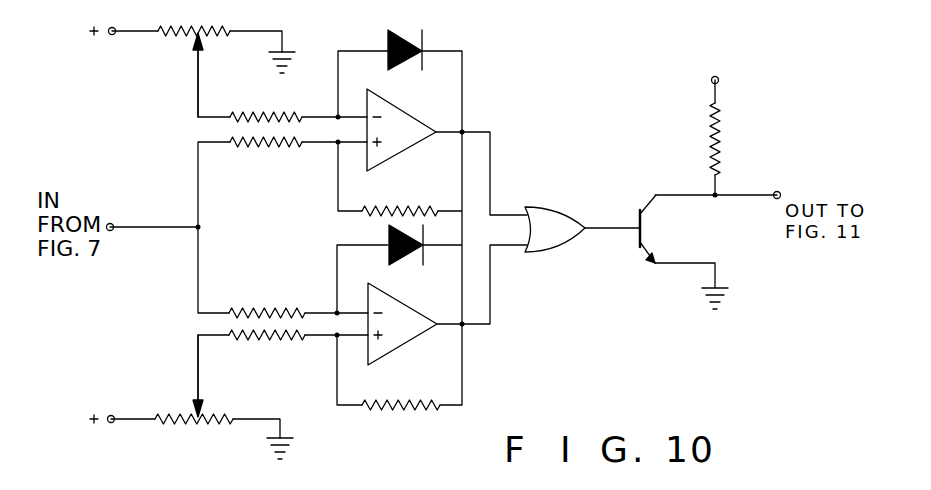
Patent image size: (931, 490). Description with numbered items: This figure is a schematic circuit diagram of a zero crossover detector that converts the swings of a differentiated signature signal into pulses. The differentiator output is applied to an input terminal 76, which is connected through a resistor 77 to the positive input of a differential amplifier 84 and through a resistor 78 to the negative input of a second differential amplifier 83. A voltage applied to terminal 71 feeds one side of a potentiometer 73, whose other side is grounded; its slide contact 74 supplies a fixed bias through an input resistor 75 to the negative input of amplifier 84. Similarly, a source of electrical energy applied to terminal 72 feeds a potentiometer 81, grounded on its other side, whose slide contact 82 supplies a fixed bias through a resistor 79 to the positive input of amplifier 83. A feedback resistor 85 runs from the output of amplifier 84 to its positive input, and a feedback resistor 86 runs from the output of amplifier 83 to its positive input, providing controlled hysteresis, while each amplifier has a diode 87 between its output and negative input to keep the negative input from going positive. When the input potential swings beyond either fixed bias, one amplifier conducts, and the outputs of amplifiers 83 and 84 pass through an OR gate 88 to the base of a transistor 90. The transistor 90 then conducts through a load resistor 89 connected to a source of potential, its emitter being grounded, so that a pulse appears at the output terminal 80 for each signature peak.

The input terminal 71 is at (114, 36).
The input terminal 72 is at (110, 413).
The potentiometer 73 is at (197, 28).
The slide contact 74 is at (192, 40).
The input resistor 75 is at (268, 112).
The input terminal 76 is at (110, 222).
The resistor 77 is at (272, 147).
The resistor 78 is at (268, 308).
The resistor 79 is at (272, 339).
The output terminal 80 is at (777, 192).
The potentiometer 81 is at (192, 425).
The slide contact 82 is at (203, 412).
The differential amplifier 83 is at (410, 327).
The differential amplifier 84 is at (410, 133).
The feedback resistor 85 is at (406, 212).
The feedback resistor 86 is at (405, 405).
The diode 87 is at (413, 35).
The OR gate 88 is at (547, 222).
The load resistor 89 is at (720, 145).
The transistor 90 is at (644, 232).